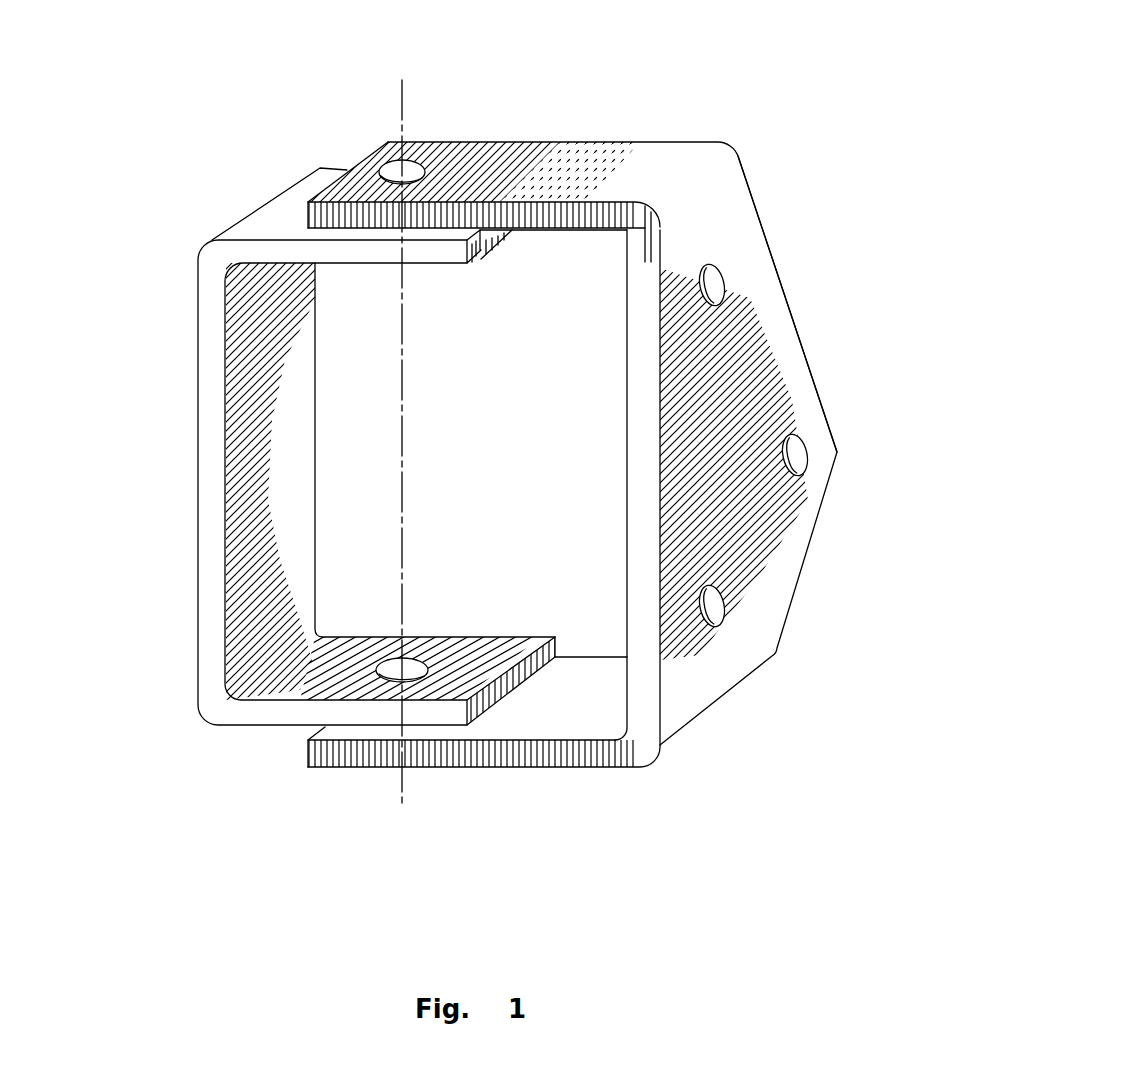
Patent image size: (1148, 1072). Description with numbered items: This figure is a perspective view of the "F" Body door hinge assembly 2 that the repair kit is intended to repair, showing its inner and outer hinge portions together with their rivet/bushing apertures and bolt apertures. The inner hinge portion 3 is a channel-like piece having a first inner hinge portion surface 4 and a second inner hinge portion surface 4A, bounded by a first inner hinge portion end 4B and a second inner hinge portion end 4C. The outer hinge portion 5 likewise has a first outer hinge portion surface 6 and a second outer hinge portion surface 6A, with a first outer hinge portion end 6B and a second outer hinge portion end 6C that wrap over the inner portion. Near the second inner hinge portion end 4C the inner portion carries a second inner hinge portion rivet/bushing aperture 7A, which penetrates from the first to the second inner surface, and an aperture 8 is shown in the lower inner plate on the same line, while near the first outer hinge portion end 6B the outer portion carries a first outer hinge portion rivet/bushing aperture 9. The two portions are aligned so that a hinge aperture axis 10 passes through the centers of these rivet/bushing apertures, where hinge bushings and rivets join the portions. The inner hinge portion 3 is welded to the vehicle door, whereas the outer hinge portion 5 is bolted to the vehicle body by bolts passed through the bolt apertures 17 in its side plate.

The body door hinge assembly 2 is at (735, 118).
The inner hinge portion 3 is at (198, 400).
The first inner hinge portion surface 4 is at (274, 222).
The second inner hinge portion surface 4A is at (273, 548).
The first inner hinge portion end 4B is at (483, 253).
The second inner hinge portion end 4C is at (535, 640).
The outer hinge portion 5 is at (795, 312).
The first outer hinge portion surface 6 is at (762, 396).
The second outer hinge portion surface 6A is at (567, 705).
The first outer hinge portion end 6B is at (362, 157).
The second outer hinge portion end 6C is at (310, 768).
The second inner hinge portion rivet/bushing aperture 7A is at (385, 673).
The bottom hole 8 is at (420, 657).
The first outer hinge portion rivet/bushing aperture 9 is at (408, 165).
The hinge aperture axis 10 is at (403, 98).
The bolt apertures 17 is at (722, 288).